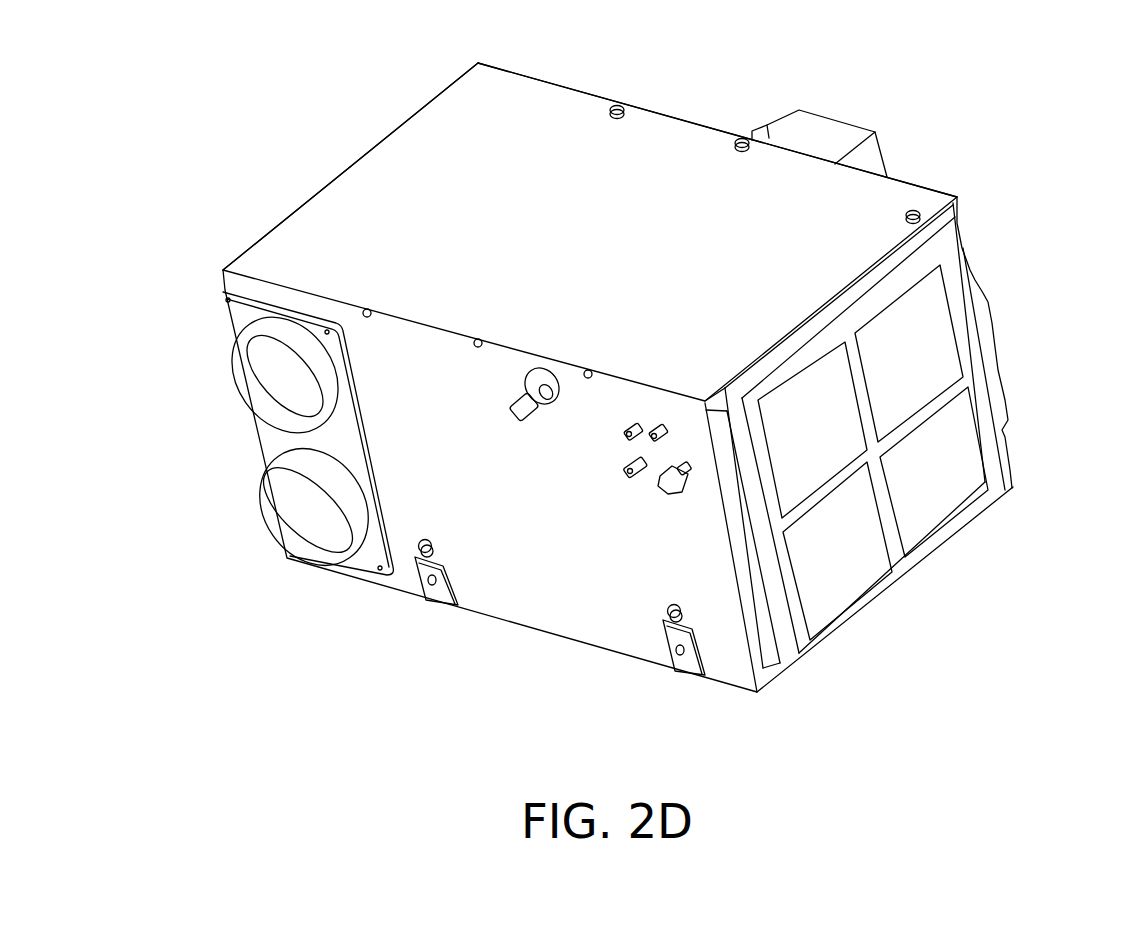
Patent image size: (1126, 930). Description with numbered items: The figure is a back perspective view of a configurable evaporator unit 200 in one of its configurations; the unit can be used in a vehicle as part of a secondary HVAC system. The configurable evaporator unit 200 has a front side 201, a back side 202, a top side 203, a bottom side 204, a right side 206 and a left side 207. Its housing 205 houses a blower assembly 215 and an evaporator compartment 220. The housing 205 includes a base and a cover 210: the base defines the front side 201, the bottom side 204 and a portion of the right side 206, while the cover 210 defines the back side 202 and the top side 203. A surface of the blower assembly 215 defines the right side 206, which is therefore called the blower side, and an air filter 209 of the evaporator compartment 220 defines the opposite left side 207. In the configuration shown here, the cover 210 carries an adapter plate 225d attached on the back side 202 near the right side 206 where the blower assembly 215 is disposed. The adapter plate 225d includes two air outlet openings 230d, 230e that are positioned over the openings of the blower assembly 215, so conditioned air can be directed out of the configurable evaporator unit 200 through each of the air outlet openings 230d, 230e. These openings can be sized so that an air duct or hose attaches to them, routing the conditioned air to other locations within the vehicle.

The configurable evaporator unit 200 is at (1040, 119).
The front side 201 is at (668, 101).
The back side 202 is at (564, 612).
The top side 203 is at (567, 118).
The bottom side 204 is at (865, 632).
The housing 205 is at (493, 86).
The right side 206 is at (284, 214).
The left side 207 is at (978, 400).
The air filter 209 is at (937, 517).
The cover 210 is at (708, 143).
The blower assembly 215 is at (392, 181).
The evaporator compartment 220 is at (928, 325).
The adapter plate 225d is at (358, 558).
The air outlet opening 230d is at (272, 500).
The air outlet opening 230e is at (240, 376).